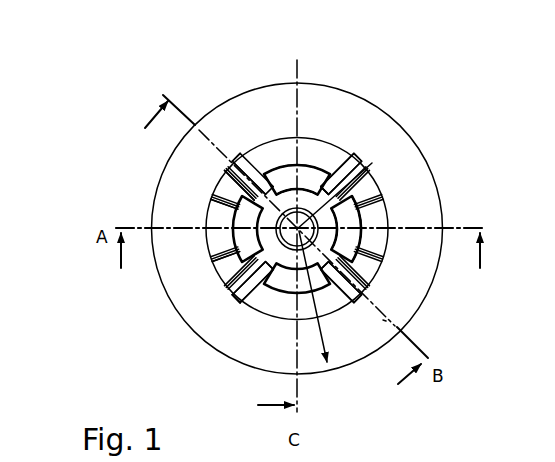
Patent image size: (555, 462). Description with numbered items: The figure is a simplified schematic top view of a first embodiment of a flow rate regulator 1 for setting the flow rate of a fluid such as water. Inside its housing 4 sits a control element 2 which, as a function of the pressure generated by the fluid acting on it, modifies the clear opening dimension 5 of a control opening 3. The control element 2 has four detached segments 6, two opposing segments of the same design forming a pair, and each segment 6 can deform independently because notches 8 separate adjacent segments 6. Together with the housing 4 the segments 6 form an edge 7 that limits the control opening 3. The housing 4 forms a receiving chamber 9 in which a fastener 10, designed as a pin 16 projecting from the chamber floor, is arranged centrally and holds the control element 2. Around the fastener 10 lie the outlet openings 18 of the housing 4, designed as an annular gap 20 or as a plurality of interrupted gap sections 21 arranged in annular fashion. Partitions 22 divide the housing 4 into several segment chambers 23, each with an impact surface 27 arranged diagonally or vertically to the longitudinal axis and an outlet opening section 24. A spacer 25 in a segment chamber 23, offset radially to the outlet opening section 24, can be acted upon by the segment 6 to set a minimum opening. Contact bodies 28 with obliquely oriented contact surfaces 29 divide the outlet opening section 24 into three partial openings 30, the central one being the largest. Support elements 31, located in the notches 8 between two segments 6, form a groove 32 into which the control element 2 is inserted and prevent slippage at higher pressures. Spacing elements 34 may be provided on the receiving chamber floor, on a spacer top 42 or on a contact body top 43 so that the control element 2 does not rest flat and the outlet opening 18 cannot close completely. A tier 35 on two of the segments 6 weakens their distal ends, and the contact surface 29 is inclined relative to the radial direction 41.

The flow rate regulator 1 is at (408, 108).
The control element 2 is at (214, 198).
The control opening 3 is at (236, 178).
The housing 4 is at (197, 305).
The clear opening dimension 5 is at (236, 157).
The segment 6 is at (264, 152).
The edge 7 is at (364, 212).
The notch 8 is at (216, 265).
The receiving chamber 9 is at (260, 172).
The fastener 10 is at (328, 180).
The pin 16 is at (296, 192).
The outlet opening 18 is at (236, 300).
The annular gap 20 is at (362, 267).
The gap section 21 is at (334, 228).
The partition 22 is at (366, 150).
The segment chamber 23 is at (248, 168).
The outlet opening section 24 is at (236, 299).
The spacer 25 is at (283, 180).
The impact surface 27 is at (222, 218).
The contact body 28 is at (363, 170).
The contact surface 29 is at (341, 282).
The partial opening 30 is at (236, 299).
The support element 31 is at (384, 320).
The groove 32 is at (170, 116).
The spacing element 34 is at (341, 173).
The tier 35 is at (318, 205).
The radial direction 41 is at (313, 296).
The spacer top 42 is at (283, 300).
The contact body top 43 is at (252, 282).